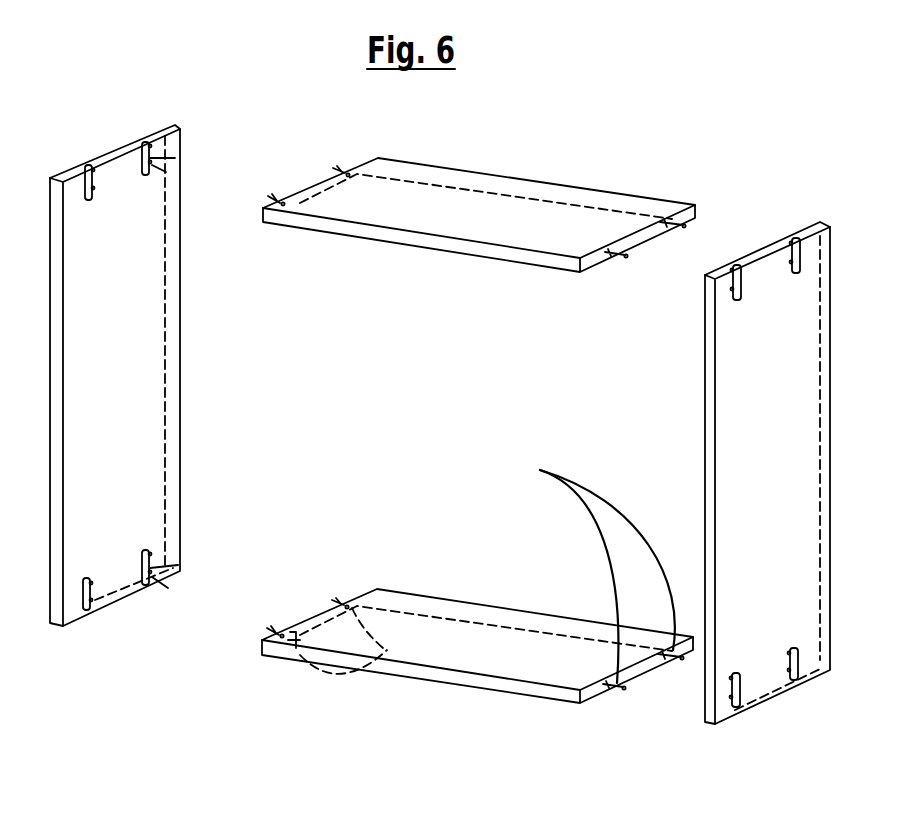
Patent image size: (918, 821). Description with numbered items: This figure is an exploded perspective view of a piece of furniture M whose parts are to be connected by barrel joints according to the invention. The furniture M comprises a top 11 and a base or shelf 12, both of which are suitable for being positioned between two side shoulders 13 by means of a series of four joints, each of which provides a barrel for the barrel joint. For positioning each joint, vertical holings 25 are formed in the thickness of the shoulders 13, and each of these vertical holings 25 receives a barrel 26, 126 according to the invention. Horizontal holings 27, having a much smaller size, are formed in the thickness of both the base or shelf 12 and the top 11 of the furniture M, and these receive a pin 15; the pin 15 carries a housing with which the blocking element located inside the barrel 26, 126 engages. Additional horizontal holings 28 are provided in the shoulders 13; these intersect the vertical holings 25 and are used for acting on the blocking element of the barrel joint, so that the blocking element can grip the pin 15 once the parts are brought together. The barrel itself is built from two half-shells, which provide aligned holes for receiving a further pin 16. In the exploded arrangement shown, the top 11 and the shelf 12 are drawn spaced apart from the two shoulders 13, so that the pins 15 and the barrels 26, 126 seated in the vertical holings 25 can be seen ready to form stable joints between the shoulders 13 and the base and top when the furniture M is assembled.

The top 11 is at (485, 219).
The base or shelf 12 is at (503, 656).
The side shoulder 13 is at (128, 374).
The pin 15 is at (297, 637).
The pin 16 is at (586, 562).
The vertical holing 25 is at (155, 160).
The barrel 26 is at (412, 436).
The barrel 126 is at (90, 188).
The horizontal holing 27 is at (387, 645).
The additional horizontal holing 28 is at (167, 137).
The piece of furniture M is at (663, 165).